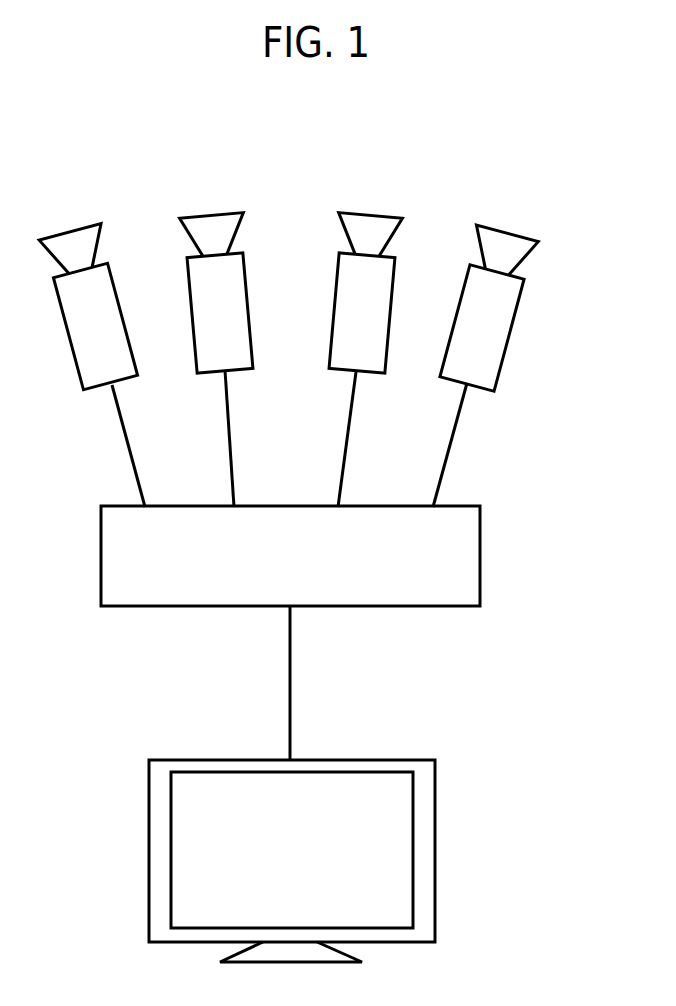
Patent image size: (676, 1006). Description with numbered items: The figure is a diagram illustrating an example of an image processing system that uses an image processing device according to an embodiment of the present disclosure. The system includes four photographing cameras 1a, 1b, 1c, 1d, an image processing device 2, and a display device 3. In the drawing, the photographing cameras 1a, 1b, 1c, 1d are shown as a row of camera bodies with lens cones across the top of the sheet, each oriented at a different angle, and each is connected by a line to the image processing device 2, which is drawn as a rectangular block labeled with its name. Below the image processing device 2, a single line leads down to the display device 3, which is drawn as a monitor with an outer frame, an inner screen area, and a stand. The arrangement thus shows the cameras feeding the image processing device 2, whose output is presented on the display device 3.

The photographing camera 1a is at (133, 348).
The photographing camera 1b is at (252, 341).
The photographing camera 1c is at (390, 338).
The photographing camera 1d is at (507, 352).
The image processing device 2 is at (481, 560).
The display device 3 is at (335, 759).